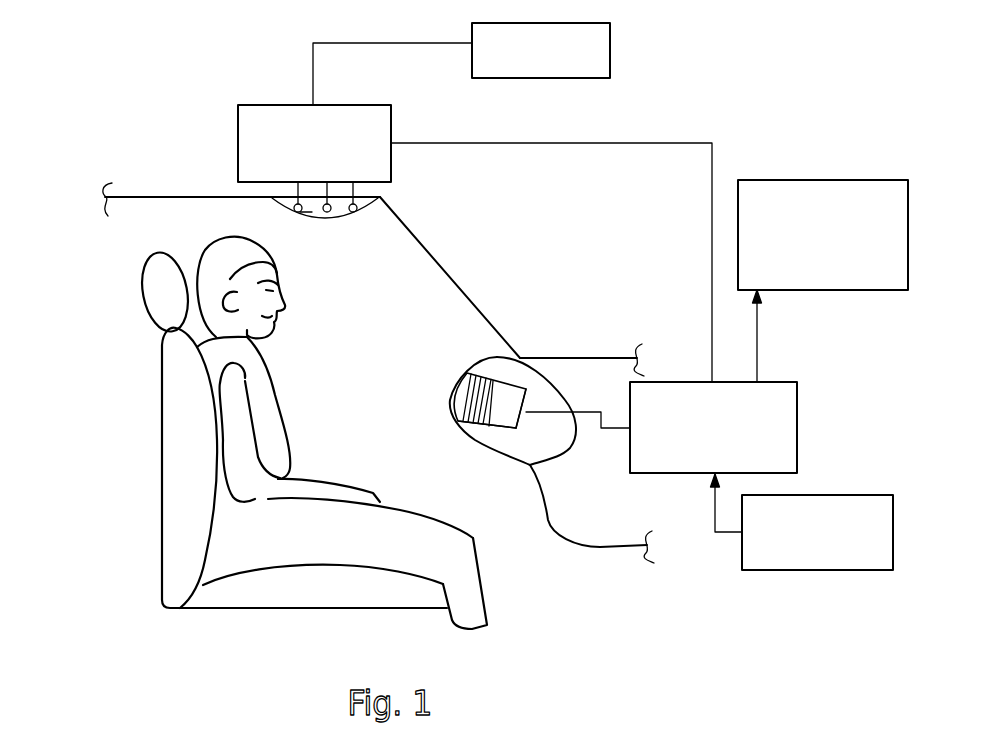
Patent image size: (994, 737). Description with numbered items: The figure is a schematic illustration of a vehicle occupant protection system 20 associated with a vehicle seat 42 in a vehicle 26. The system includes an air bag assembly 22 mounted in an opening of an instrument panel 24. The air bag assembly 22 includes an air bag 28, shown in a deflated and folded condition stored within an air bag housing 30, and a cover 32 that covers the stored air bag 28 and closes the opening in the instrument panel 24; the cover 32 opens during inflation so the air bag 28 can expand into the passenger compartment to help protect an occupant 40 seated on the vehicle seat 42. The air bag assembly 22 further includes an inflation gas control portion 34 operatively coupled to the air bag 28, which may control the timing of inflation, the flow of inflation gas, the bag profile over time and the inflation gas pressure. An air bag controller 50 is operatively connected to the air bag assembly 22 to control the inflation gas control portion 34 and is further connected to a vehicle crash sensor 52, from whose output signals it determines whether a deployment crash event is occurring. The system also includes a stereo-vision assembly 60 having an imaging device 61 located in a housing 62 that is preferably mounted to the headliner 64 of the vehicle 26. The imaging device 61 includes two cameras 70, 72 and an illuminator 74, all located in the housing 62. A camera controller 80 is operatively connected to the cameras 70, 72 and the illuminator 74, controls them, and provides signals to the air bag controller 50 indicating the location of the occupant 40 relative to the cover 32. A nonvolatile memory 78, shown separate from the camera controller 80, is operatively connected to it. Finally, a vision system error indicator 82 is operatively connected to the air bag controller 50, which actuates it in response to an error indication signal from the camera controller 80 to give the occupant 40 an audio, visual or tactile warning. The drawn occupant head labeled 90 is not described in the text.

The vehicle occupant protection system 20 is at (612, 110).
The air bag assembly 22 is at (503, 377).
The instrument panel 24 is at (488, 355).
The vehicle 26 is at (187, 196).
The air bag 28 is at (459, 422).
The air bag housing 30 is at (498, 435).
The cover 32 is at (452, 397).
The inflation gas control portion 34 is at (512, 432).
The occupant 40 is at (262, 368).
The vehicle seat 42 is at (160, 418).
The air bag controller 50 is at (788, 381).
The vehicle crash sensor 52 is at (820, 493).
The stereo-vision assembly 60 is at (178, 106).
The imaging device 61 is at (277, 208).
The housing 62 is at (306, 216).
The headliner 64 is at (207, 198).
The camera 70 is at (297, 214).
The camera 72 is at (330, 218).
The illuminator 74 is at (362, 208).
The nonvolatile memory 78 is at (470, 40).
The camera controller 80 is at (373, 105).
The vision system error indicator 82 is at (813, 178).
The occupant head 90 is at (200, 247).